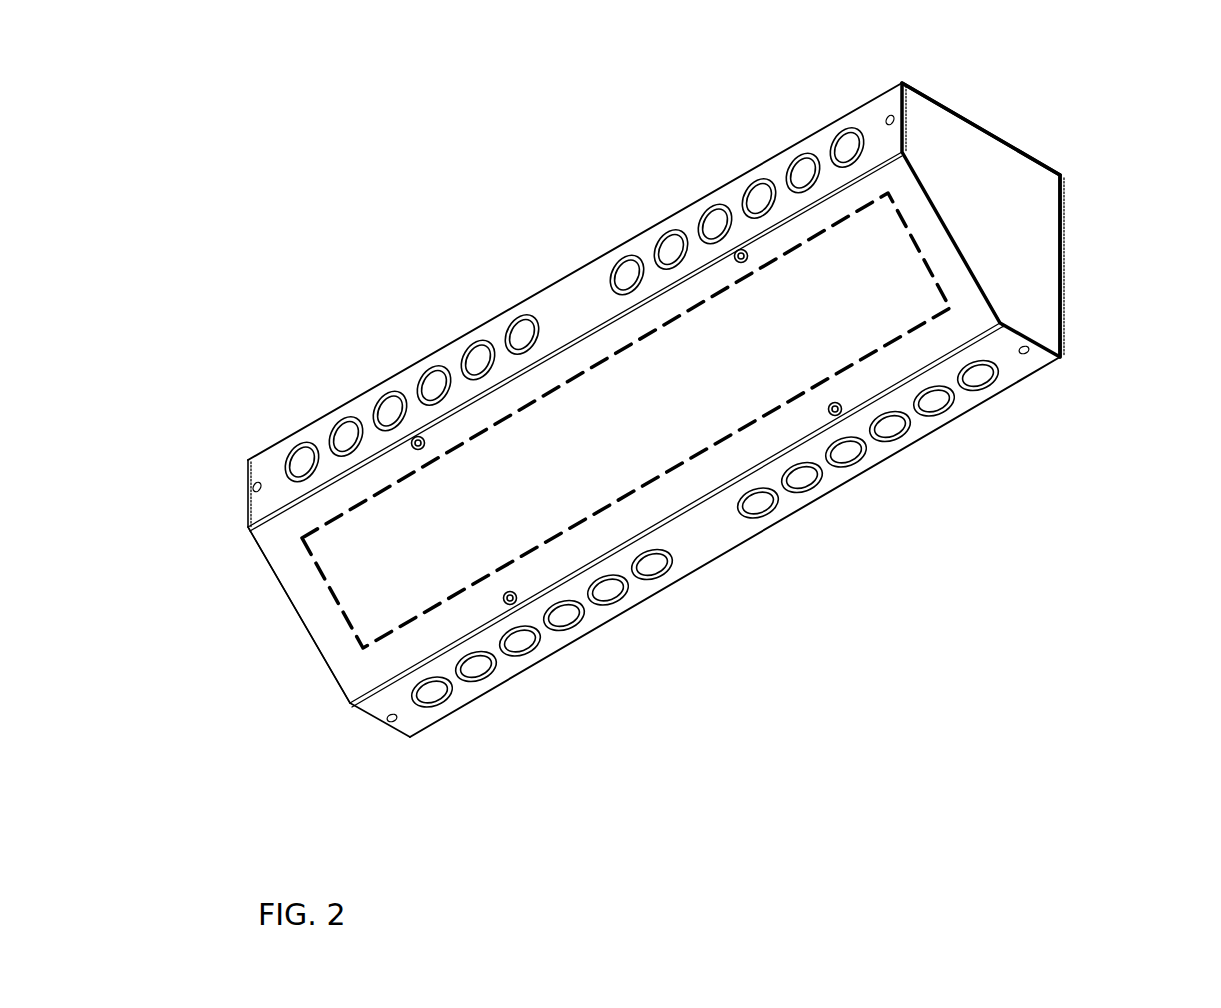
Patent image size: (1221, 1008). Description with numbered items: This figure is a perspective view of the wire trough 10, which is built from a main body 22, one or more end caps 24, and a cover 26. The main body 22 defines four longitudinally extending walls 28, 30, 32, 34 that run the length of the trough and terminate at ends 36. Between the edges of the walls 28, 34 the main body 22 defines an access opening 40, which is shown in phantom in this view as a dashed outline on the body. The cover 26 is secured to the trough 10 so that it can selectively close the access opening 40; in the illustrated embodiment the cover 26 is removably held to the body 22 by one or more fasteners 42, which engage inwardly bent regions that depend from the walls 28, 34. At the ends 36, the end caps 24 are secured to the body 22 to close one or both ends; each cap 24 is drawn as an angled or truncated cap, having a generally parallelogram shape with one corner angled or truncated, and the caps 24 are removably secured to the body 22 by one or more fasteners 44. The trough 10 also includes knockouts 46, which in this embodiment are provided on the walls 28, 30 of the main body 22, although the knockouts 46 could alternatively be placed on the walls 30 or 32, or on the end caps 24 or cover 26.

The trough 10 is at (312, 198).
The main body 22 is at (567, 262).
The end cap 24 is at (1044, 194).
The cover 26 is at (282, 575).
The wall 28 is at (552, 305).
The wall 30 is at (985, 122).
The wall 32 is at (1063, 265).
The wall 34 is at (700, 547).
The ends 36 is at (246, 490).
The access opening 40 is at (342, 617).
The fasteners 42 is at (416, 437).
The fasteners 44 is at (258, 482).
The knockouts 46 is at (308, 443).